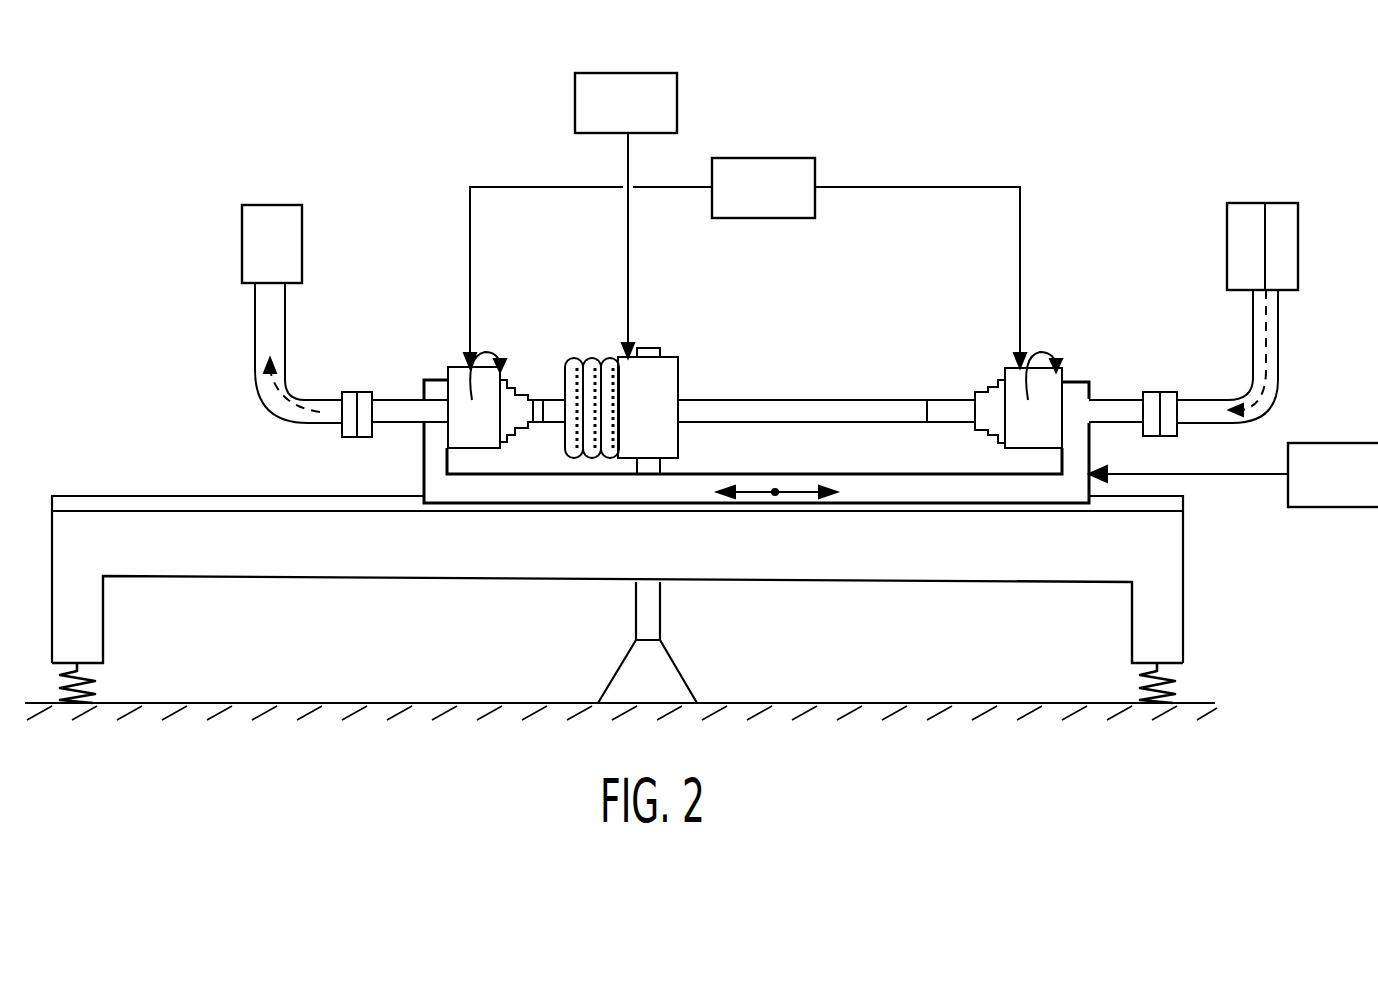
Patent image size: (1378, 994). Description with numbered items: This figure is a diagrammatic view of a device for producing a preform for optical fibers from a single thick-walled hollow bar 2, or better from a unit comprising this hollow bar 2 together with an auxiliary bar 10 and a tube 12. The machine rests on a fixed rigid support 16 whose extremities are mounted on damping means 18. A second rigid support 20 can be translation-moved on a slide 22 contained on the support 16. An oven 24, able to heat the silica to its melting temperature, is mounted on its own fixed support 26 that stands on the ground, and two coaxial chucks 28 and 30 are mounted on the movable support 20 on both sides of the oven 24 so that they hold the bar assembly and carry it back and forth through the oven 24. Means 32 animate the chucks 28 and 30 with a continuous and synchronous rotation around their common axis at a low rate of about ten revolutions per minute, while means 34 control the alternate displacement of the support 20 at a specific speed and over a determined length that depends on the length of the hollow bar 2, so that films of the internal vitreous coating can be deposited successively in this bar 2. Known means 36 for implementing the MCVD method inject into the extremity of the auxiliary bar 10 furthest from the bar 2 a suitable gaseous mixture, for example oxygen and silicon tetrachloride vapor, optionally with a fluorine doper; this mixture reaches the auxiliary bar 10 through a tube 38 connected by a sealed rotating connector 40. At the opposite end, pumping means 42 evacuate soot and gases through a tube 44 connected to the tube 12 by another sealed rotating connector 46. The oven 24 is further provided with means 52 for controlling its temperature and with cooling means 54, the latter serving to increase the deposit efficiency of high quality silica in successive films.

The thick-walled hollow bar 2 is at (806, 400).
The auxiliary bar 10 is at (1125, 399).
The tube 12 is at (398, 400).
The fixed rigid support 16 is at (366, 575).
The damping means 18 is at (97, 681).
The movable rigid support 20 is at (888, 491).
The slide 22 is at (108, 500).
The oven 24 is at (672, 380).
The fixed support 26 is at (672, 681).
The chuck 28 is at (1050, 372).
The chuck 30 is at (463, 372).
The rotation means 32 is at (815, 172).
The displacement control means 34 is at (1345, 508).
The MCVD injection means 36 is at (1290, 222).
The tube 38 is at (1280, 401).
The sealed rotating connector 40 is at (1165, 436).
The pumping means 42 is at (258, 245).
The tube 44 is at (272, 425).
The sealed rotating connector 46 is at (353, 438).
The temperature control means 52 is at (677, 92).
The cooling means 54 is at (571, 378).